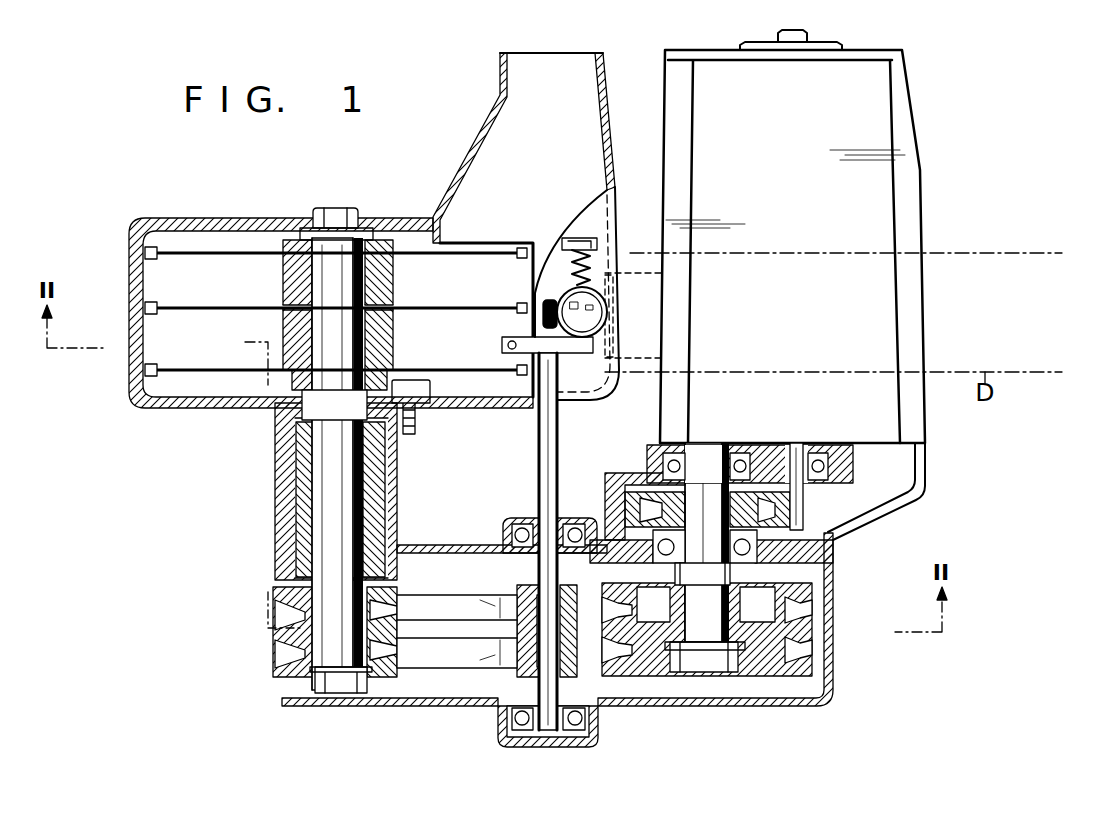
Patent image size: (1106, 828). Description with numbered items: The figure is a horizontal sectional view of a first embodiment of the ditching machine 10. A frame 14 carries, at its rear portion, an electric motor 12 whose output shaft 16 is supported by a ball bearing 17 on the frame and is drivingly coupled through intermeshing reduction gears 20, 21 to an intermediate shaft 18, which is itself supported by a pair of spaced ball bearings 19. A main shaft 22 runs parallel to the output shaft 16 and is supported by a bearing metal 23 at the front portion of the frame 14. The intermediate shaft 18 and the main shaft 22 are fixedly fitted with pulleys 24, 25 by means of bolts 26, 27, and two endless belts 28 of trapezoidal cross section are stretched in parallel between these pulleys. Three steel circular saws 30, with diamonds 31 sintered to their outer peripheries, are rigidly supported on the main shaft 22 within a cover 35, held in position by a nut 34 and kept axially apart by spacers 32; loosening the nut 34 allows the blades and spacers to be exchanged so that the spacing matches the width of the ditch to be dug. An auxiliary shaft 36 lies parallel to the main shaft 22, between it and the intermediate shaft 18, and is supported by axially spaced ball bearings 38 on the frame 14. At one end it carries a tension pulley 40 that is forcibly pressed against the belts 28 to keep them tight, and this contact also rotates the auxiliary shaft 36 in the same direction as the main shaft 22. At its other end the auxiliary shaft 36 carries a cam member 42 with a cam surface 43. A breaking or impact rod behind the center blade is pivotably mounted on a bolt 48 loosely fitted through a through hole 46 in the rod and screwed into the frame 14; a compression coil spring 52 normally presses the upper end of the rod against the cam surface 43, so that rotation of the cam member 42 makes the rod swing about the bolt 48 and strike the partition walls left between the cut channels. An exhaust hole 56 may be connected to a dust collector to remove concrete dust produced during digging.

The ditching machine 10 is at (928, 182).
The electric motor 12 is at (886, 113).
The frame 14 is at (880, 512).
The output shaft 16 is at (791, 444).
The ball bearing 17 is at (852, 462).
The intermediate shaft 18 is at (735, 630).
The ball bearings 19 is at (655, 457).
The reduction gear 20 is at (835, 551).
The reduction gear 21 is at (758, 492).
The main shaft 22 is at (320, 332).
The bearing metal 23 is at (276, 504).
The pulley 24 is at (660, 680).
The pulley 25 is at (273, 627).
The bolt 26 is at (722, 678).
The bolt 27 is at (357, 695).
The endless belts 28 is at (444, 635).
The circular saws 30 is at (234, 256).
The diamonds 31 is at (143, 256).
The spacers 32 is at (395, 265).
The nut 34 is at (357, 210).
The cover 35 is at (245, 218).
The auxiliary shaft 36 is at (538, 459).
The ball bearings 38 is at (506, 527).
The tension pulley 40 is at (598, 710).
The cam member 42 is at (595, 345).
The cam surface 43 is at (503, 340).
The through hole 46 is at (606, 310).
The bolt 48 is at (534, 290).
The compression coil spring 52 is at (570, 246).
The exhaust hole 56 is at (548, 66).